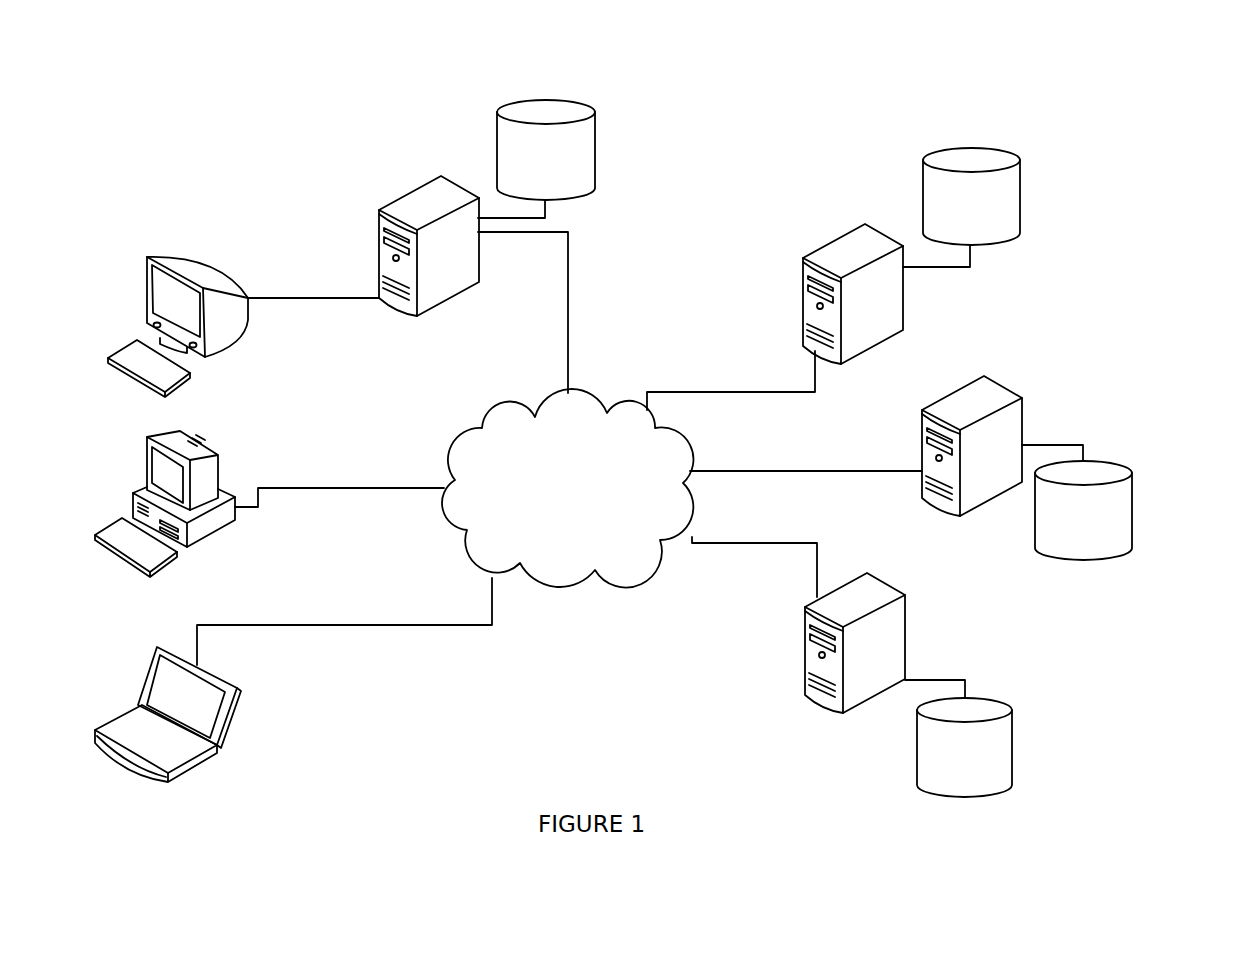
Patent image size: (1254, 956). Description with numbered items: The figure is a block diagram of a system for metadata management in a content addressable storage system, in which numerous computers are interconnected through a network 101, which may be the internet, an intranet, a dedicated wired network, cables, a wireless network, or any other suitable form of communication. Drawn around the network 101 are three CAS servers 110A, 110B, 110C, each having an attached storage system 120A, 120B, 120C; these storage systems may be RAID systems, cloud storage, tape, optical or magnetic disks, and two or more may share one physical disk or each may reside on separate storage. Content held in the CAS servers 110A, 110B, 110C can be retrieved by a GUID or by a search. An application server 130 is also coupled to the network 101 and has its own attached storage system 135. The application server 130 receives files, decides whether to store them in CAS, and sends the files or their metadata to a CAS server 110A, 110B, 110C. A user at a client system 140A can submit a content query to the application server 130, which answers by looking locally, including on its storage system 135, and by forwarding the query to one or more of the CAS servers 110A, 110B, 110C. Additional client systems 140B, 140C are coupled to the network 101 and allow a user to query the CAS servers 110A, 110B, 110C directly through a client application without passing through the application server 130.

The network 101 is at (567, 587).
The application server 130 is at (407, 193).
The storage system 135 is at (543, 98).
The CAS server 110A is at (832, 243).
The CAS server 110B is at (1010, 390).
The CAS server 110C is at (907, 613).
The storage system 120A is at (970, 147).
The storage system 120B is at (1135, 507).
The storage system 120C is at (1015, 743).
The client system 140A is at (170, 253).
The client system 140B is at (200, 445).
The client system 140C is at (230, 708).